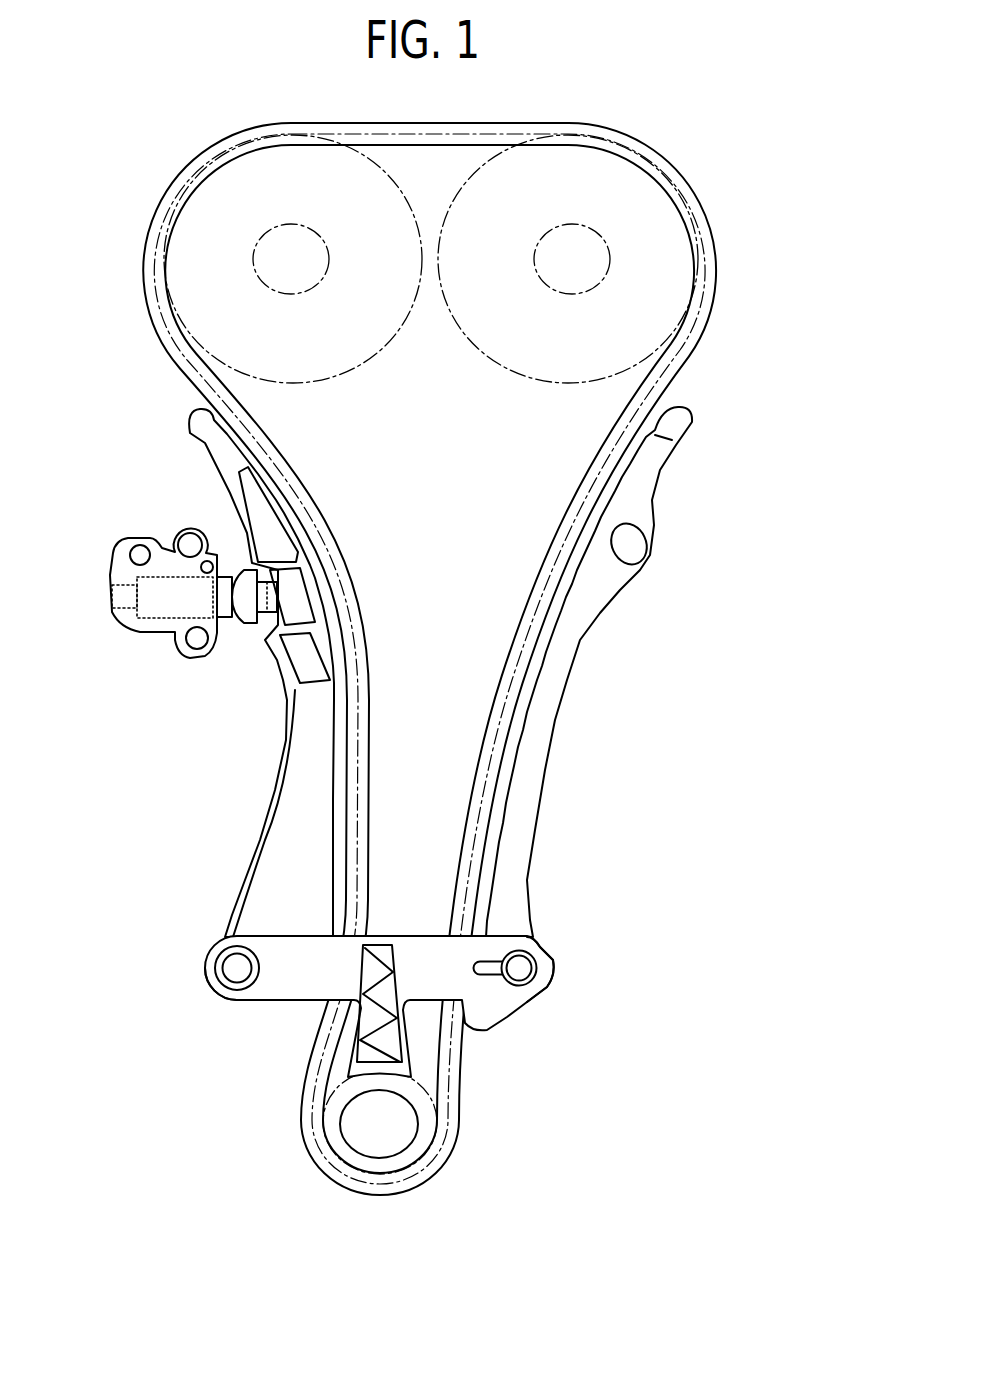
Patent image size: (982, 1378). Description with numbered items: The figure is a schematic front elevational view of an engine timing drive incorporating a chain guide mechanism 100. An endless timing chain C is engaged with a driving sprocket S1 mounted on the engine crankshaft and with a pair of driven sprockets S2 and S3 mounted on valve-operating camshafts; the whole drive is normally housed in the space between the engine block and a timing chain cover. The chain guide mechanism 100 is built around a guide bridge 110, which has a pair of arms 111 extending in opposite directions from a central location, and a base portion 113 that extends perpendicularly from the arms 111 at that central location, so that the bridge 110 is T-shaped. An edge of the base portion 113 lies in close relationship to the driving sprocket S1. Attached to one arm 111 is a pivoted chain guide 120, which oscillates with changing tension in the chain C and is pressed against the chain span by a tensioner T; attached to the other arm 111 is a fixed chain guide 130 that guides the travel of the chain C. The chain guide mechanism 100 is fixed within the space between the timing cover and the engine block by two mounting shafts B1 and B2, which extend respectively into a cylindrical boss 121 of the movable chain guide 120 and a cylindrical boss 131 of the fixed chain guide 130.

The chain guide mechanism 100 is at (431, 659).
The timing chain C is at (655, 380).
The driving sprocket S1 is at (402, 1133).
The driven sprocket S2 is at (208, 220).
The driven sprocket S3 is at (648, 218).
The tensioner T is at (110, 577).
The guide bridge 110 is at (407, 976).
The arms 111 is at (380, 976).
The base portion 113 is at (437, 957).
The pivoted chain guide 120 is at (297, 823).
The cylindrical boss 121 is at (222, 983).
The fixed chain guide 130 is at (512, 822).
The cylindrical boss 131 is at (530, 985).
The mounting shaft B1 is at (232, 968).
The mounting shaft B2 is at (523, 968).